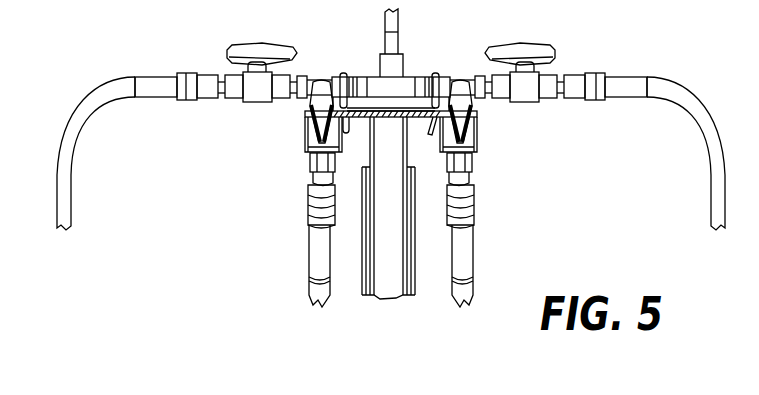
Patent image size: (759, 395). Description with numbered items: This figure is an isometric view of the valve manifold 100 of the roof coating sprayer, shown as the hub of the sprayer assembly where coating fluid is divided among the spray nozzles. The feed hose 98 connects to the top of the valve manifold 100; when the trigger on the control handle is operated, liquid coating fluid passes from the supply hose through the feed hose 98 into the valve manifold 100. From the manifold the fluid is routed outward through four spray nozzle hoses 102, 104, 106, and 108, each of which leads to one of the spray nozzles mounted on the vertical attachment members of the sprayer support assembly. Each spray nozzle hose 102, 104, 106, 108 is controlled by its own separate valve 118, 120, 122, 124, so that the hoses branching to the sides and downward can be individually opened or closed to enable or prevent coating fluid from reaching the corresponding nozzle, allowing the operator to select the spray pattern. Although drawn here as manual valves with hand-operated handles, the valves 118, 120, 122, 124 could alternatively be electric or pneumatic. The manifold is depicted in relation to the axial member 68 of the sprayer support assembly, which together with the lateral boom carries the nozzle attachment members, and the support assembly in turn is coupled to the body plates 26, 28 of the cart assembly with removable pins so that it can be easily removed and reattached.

The body plate 26 is at (412, 215).
The body plate 28 is at (363, 223).
The axial member 68 is at (380, 283).
The feed hose 98 is at (385, 27).
The valve manifold 100 is at (430, 75).
The spray nozzle hose 102 is at (665, 88).
The spray nozzle hose 104 is at (465, 260).
The spray nozzle hose 106 is at (313, 257).
The spray nozzle hose 108 is at (117, 80).
The valve 118 is at (543, 47).
The valve 120 is at (460, 130).
The valve 122 is at (317, 125).
The valve 124 is at (245, 48).